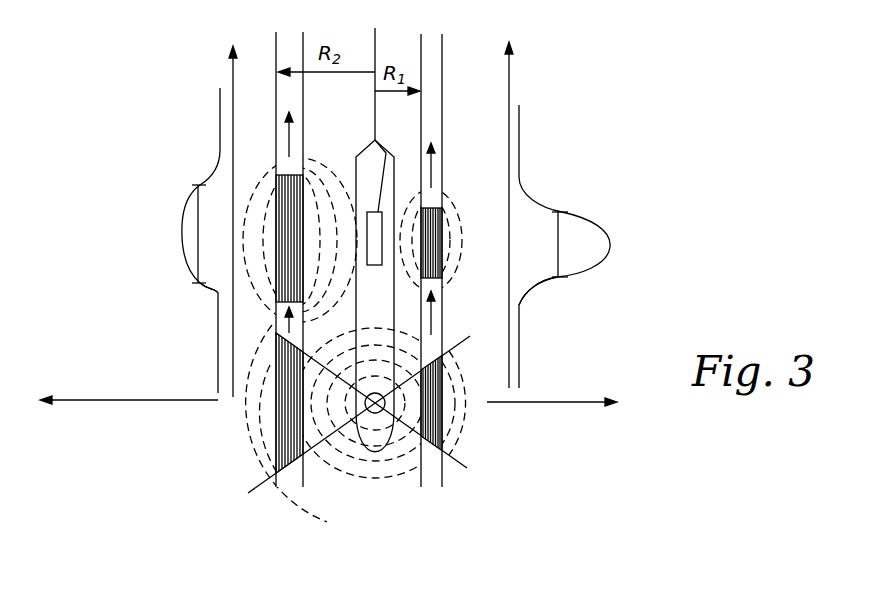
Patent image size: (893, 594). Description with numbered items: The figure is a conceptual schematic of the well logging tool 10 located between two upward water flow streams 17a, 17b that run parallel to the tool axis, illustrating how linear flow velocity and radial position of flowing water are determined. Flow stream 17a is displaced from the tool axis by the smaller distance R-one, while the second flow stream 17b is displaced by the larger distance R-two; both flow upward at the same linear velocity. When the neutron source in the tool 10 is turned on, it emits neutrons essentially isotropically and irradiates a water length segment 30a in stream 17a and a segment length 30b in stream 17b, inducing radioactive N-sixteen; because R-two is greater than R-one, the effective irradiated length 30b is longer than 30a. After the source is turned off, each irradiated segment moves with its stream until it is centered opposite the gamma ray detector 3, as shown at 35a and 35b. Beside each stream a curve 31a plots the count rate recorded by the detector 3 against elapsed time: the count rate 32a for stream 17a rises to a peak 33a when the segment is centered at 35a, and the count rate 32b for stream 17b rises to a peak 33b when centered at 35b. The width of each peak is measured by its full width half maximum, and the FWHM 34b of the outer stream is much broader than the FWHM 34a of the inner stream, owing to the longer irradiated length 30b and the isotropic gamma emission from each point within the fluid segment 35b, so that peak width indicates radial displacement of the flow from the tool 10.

The gamma ray detector 3 is at (386, 148).
The well logging tool 10 is at (368, 157).
The water flow stream 17a is at (444, 123).
The second water flow stream 17b is at (260, 243).
The irradiated water length segment 30a is at (442, 388).
The irradiated segment length 30b is at (276, 420).
The count rate curve 31a is at (564, 246).
The count rate 32a is at (565, 239).
The count rate 32b is at (150, 239).
The count rate peak 33a is at (613, 248).
The count rate peak 33b is at (182, 223).
The full width half maximum 34a is at (563, 250).
The full width half maximum 34b is at (215, 292).
The irradiated segment centered opposite detector 35a is at (443, 258).
The irradiated fluid segment centered opposite detector 35b is at (276, 176).